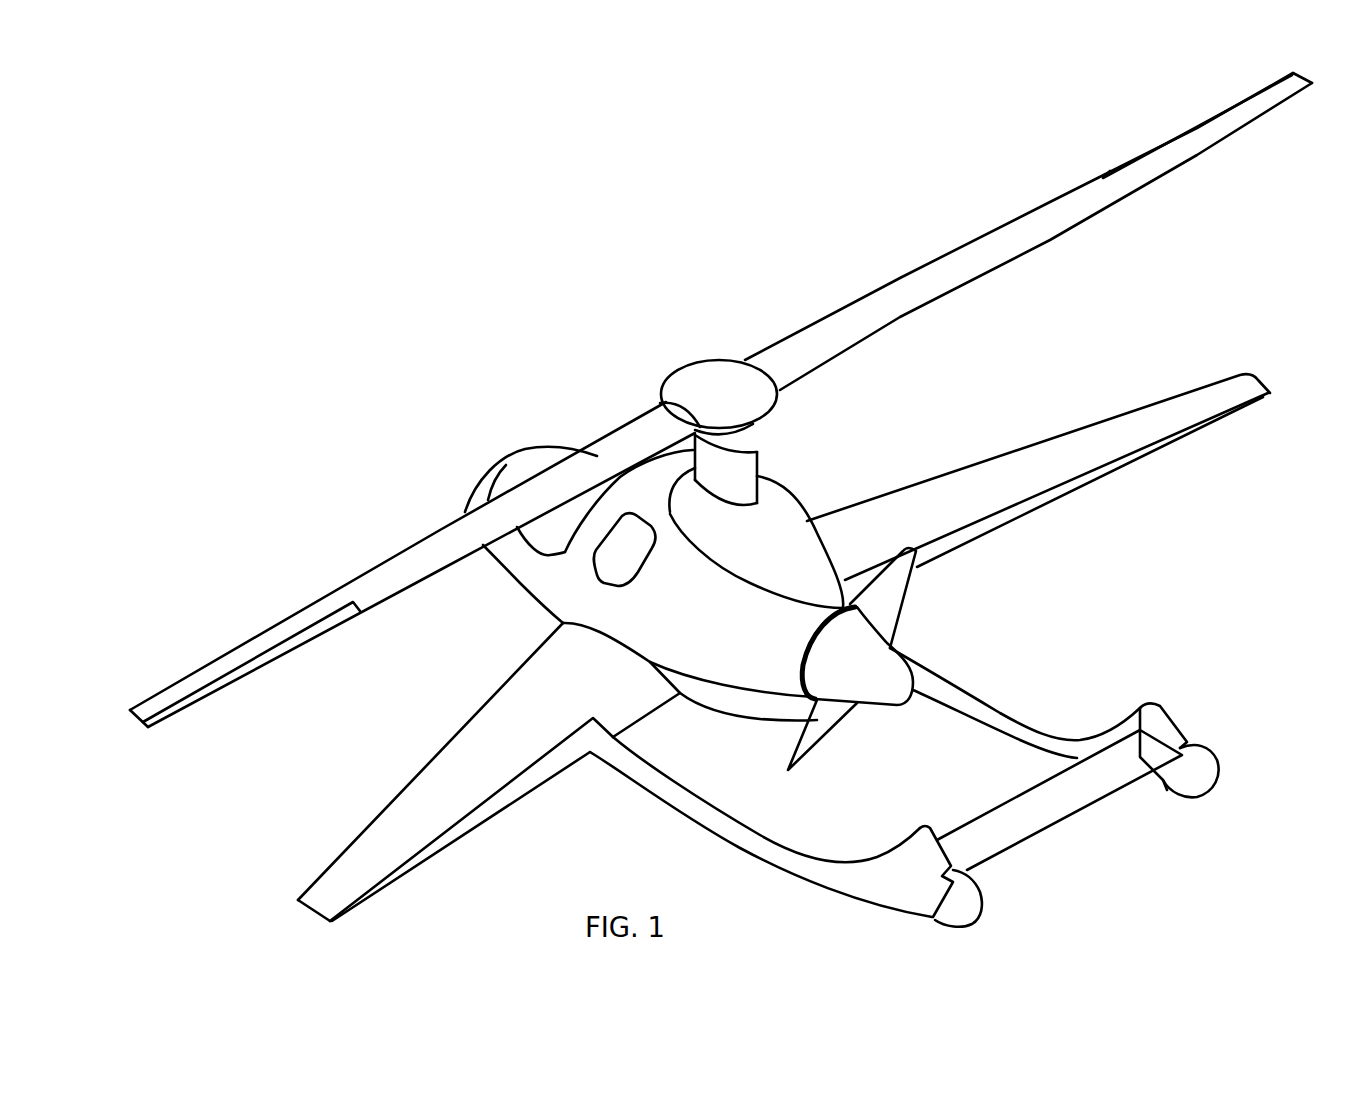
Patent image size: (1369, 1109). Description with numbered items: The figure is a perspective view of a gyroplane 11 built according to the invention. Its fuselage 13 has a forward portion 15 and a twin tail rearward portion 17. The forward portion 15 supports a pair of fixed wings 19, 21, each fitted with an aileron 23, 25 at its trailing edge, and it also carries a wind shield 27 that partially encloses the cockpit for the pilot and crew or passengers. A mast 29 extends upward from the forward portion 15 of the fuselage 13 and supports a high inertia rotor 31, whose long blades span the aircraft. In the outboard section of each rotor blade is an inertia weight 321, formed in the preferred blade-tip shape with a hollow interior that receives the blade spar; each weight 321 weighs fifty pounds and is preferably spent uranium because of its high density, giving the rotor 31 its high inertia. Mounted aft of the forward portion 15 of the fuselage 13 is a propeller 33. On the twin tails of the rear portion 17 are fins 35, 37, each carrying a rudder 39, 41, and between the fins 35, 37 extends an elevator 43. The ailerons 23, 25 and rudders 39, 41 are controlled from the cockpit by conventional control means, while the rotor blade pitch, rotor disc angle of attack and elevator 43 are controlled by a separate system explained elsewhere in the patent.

The gyroplane 11 is at (590, 402).
The fuselage 13 is at (560, 583).
The forward portion 15 is at (490, 553).
The twin tail rearward portion 17 is at (730, 837).
The fixed wing 19 is at (1073, 443).
The fixed wing 21 is at (470, 770).
The aileron 23 is at (1127, 457).
The aileron 25 is at (407, 860).
The wind shield 27 is at (520, 470).
The rotor mast 29 is at (753, 453).
The high inertia rotor 31 is at (923, 292).
The inertia weight 321 is at (1145, 157).
The propeller 33 is at (890, 608).
The fin 35 is at (1160, 718).
The fin 37 is at (910, 882).
The rudder 39 is at (1200, 777).
The rudder 41 is at (957, 907).
The elevator 43 is at (1060, 803).